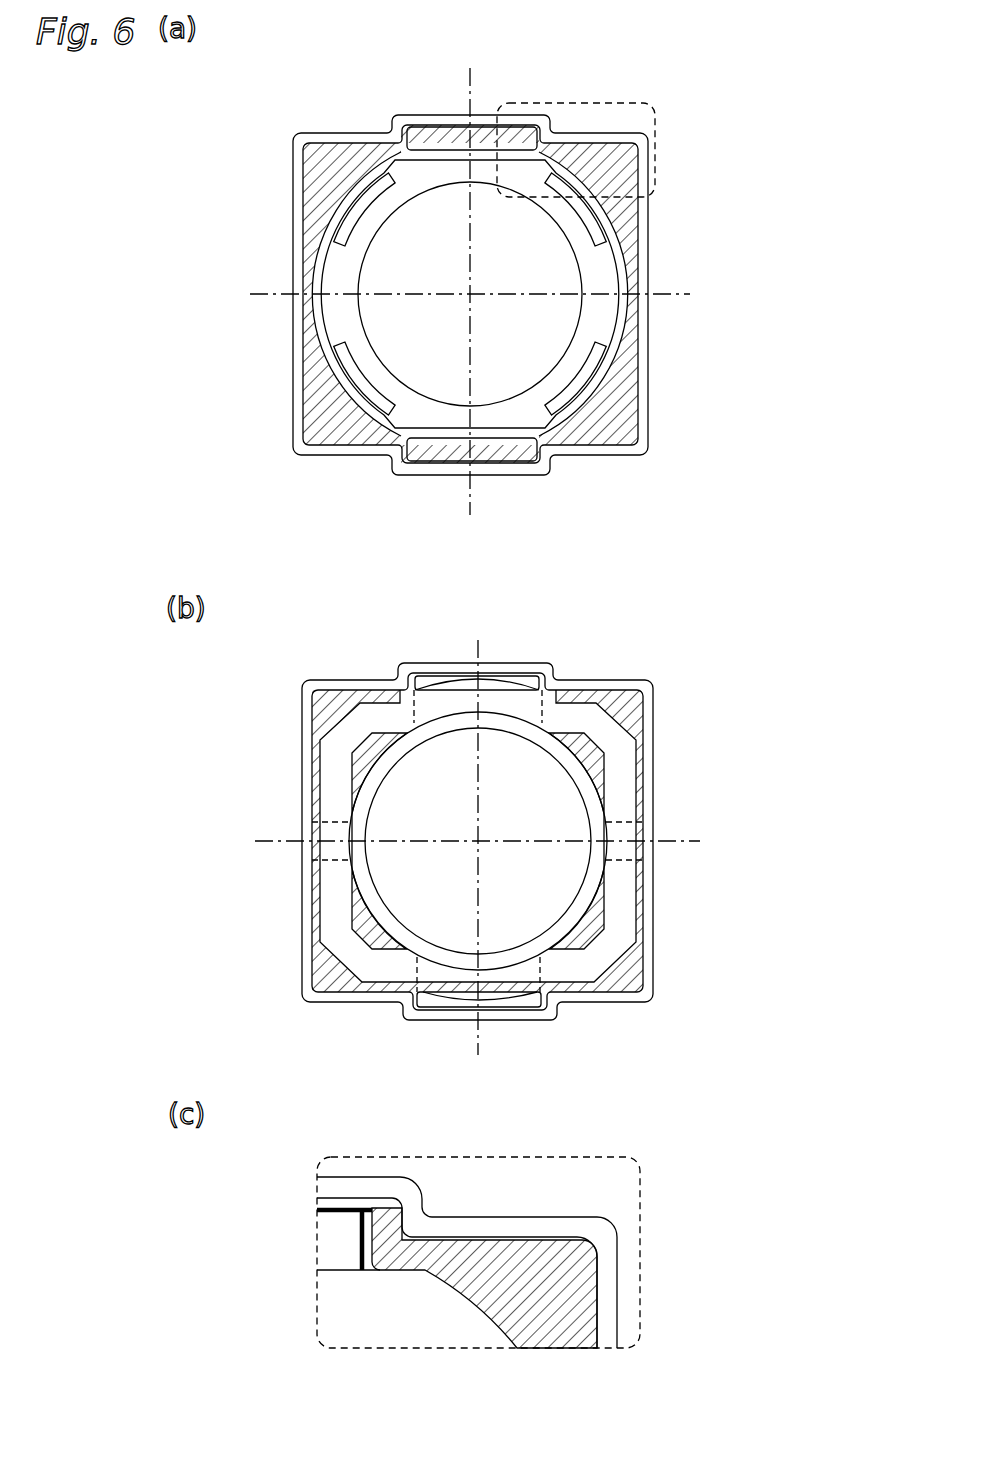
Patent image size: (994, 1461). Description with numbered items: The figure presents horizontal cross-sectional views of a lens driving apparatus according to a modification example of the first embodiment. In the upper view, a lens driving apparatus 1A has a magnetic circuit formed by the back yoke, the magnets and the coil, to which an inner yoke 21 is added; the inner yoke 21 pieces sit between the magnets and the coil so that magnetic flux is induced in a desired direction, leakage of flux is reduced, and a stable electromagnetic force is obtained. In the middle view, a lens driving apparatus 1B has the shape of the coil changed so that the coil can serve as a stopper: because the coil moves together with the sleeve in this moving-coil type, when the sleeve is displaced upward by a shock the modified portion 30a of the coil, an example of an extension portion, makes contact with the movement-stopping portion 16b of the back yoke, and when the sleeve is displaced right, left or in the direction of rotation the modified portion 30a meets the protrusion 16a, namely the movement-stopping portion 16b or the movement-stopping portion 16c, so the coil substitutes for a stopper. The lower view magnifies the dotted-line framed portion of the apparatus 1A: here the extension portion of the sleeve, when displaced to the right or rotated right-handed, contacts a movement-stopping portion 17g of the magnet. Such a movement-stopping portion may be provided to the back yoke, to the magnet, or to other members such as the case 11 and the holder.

The lens driving apparatus 1A is at (687, 128).
The lens driving apparatus 1B is at (670, 658).
The case 11 is at (656, 772).
The protrusion 16a is at (606, 601).
The movement-stopping portion 16b is at (518, 673).
The movement-stopping portion 16c is at (555, 664).
The movement-stopping portion 17g is at (398, 1228).
The inner yoke 21 is at (360, 238).
The modified portion 30a is at (493, 703).